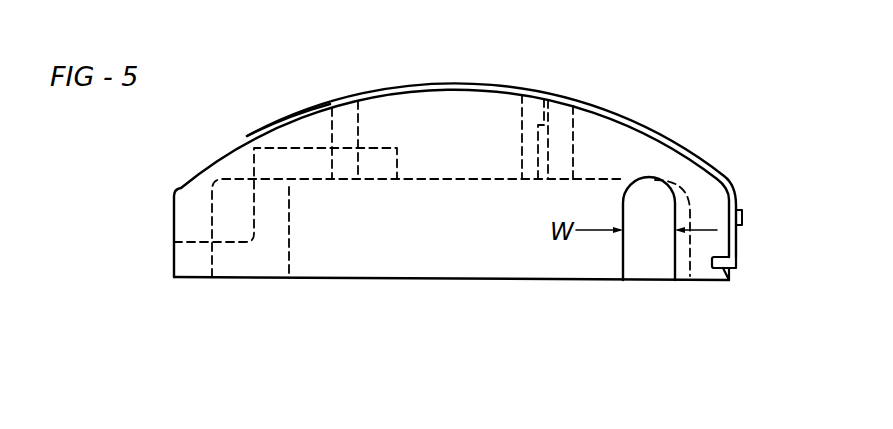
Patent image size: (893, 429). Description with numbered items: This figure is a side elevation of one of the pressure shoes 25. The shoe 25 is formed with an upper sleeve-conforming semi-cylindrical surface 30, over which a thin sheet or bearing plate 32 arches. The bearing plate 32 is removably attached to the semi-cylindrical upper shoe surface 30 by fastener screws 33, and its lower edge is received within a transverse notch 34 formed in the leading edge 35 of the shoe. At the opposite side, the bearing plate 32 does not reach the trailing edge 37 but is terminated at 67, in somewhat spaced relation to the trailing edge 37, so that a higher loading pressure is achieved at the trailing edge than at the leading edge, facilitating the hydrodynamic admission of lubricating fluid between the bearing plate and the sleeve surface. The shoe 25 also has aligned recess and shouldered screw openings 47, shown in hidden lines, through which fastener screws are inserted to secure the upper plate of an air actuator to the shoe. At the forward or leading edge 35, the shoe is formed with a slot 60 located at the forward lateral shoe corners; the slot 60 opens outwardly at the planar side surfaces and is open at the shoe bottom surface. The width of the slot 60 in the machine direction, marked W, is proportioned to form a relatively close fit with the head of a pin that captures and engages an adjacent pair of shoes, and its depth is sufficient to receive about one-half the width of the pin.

The shoe 25 is at (245, 280).
The semi-cylindrical upper shoe surface 30 is at (213, 153).
The bearing plate 32 is at (650, 130).
The fastener screws 33 is at (745, 218).
The transverse notch 34 is at (728, 283).
The leading edge 35 is at (738, 272).
The trailing edge 37 is at (173, 242).
The shouldered screw openings 47 is at (525, 125).
The slot 60 is at (643, 267).
The bearing plate termination 67 is at (248, 134).